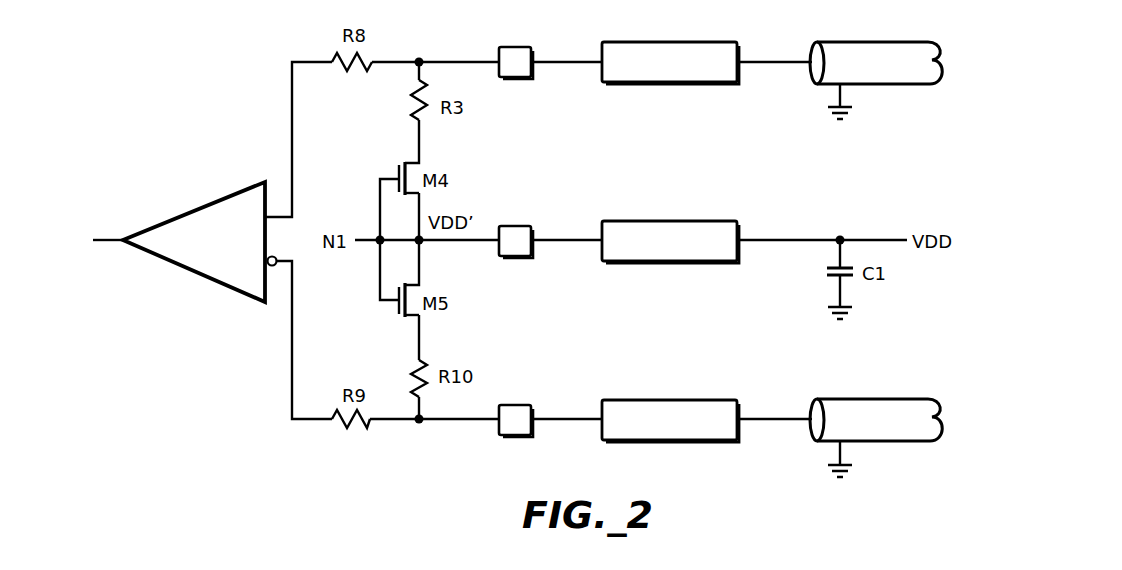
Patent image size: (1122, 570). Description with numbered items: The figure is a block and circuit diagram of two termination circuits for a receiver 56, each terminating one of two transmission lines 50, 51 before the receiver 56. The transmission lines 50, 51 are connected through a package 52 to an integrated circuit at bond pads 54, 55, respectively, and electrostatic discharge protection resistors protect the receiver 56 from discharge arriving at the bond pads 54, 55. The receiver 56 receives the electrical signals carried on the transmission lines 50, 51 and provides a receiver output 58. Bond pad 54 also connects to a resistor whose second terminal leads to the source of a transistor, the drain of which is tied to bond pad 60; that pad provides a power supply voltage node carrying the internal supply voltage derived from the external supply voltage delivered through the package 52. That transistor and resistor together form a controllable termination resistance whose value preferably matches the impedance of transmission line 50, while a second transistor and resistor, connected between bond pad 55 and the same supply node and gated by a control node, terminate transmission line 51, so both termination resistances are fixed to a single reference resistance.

The transmission line 50 is at (858, 36).
The transmission line 51 is at (858, 396).
The package 52 is at (655, 42).
The bond pad 54 is at (512, 47).
The bond pad 55 is at (512, 405).
The receiver 56 is at (236, 292).
The receiver output 58 is at (107, 241).
The bond pad 60 is at (512, 226).